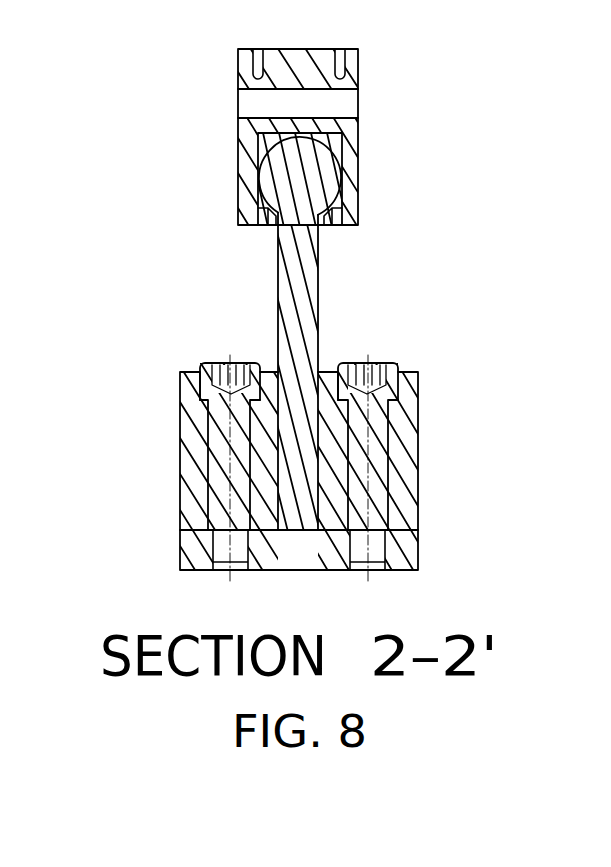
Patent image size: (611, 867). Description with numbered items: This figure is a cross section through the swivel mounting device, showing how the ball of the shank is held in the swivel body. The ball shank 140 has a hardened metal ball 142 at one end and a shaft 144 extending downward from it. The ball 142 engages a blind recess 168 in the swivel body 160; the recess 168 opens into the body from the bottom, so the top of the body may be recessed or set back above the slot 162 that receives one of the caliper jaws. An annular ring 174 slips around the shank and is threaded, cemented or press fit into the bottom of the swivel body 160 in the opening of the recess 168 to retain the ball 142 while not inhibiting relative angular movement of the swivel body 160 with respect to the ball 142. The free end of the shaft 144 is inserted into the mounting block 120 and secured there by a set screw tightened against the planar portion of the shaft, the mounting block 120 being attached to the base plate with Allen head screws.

The mounting block 120 is at (432, 458).
The ball shank 140 is at (315, 332).
The ball 142 is at (288, 192).
The shaft 144 is at (290, 275).
The swivel body 160 is at (377, 160).
The slot 162 is at (342, 102).
The blind recess 168 is at (263, 142).
The annular ring 174 is at (340, 228).